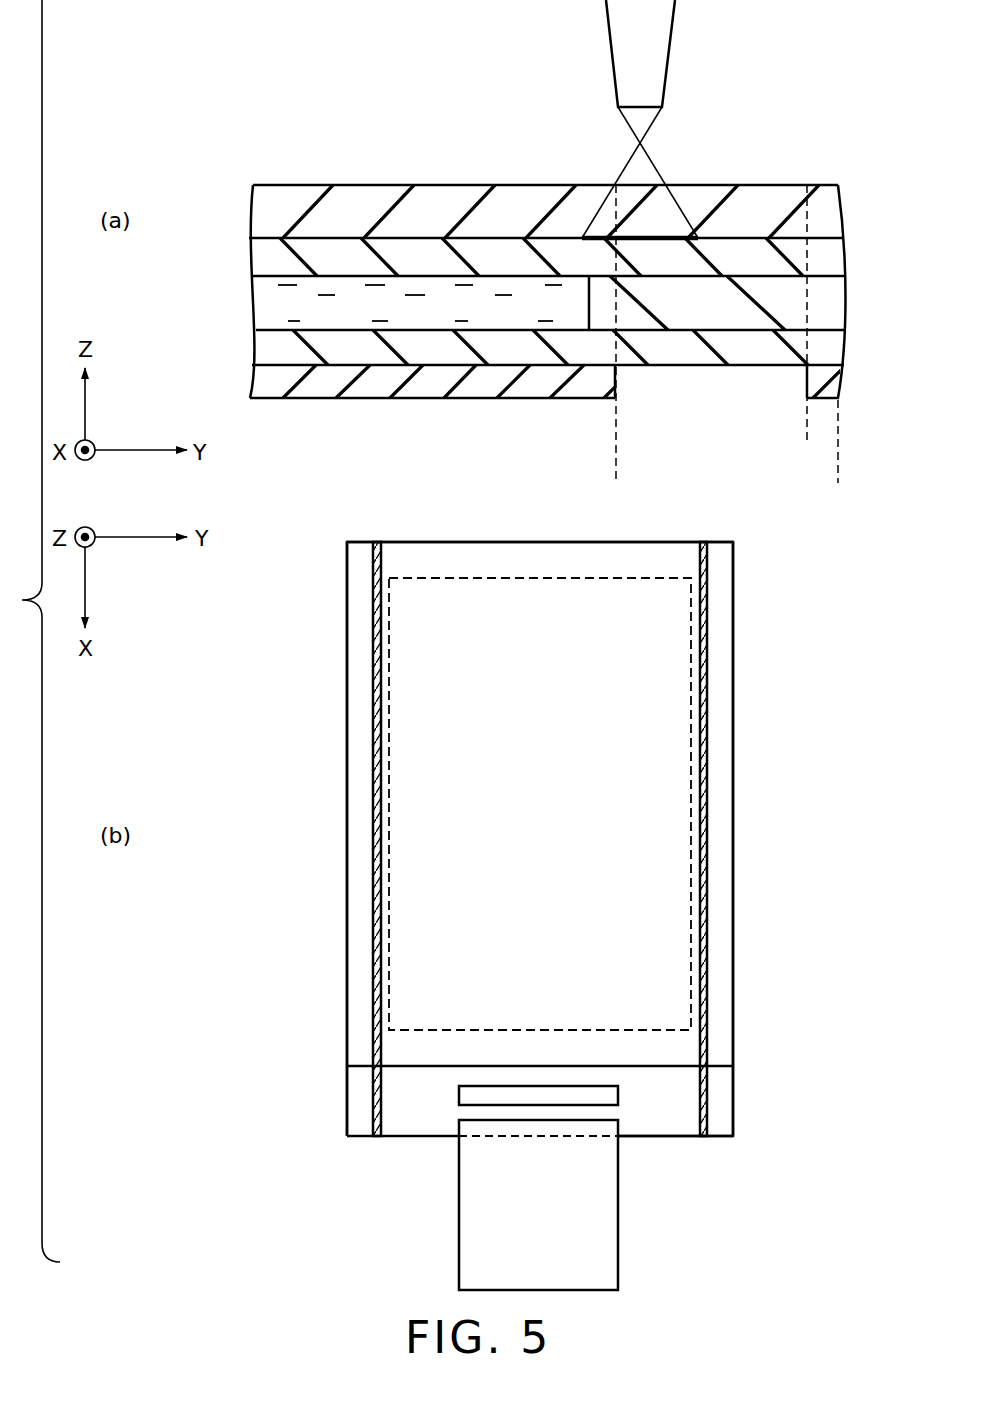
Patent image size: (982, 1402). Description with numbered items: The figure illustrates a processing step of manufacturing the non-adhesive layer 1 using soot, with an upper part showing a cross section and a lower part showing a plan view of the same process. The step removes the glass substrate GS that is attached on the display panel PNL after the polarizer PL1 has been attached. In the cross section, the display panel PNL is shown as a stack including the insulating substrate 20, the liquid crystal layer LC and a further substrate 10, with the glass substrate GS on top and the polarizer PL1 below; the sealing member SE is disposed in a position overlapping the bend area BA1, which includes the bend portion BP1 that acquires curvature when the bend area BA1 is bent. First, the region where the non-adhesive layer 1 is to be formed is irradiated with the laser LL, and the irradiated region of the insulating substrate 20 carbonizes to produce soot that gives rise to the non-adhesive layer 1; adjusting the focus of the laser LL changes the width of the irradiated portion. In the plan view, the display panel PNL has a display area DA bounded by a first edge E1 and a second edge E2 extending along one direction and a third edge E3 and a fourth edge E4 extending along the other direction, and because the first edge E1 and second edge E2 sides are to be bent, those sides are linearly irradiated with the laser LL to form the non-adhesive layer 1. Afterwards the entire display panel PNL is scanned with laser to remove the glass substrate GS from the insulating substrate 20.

The glass substrate GS is at (260, 216).
The insulating substrate 20 is at (262, 262).
The liquid crystal layer LC is at (270, 303).
The first substrate (array substrate) 10 is at (274, 351).
The display panel PNL is at (253, 238).
The polarizer PL1 is at (373, 385).
The sealing member SE is at (825, 298).
The laser LL is at (656, 157).
The non-adhesive layer 1 is at (673, 238).
The bend portion BP1 is at (617, 423).
The bend area BA1 is at (617, 468).
The display area DA is at (557, 578).
The first edge E1 is at (733, 953).
The second edge E2 is at (347, 940).
The third edge E3 is at (463, 542).
The fourth edge E4 is at (660, 1138).